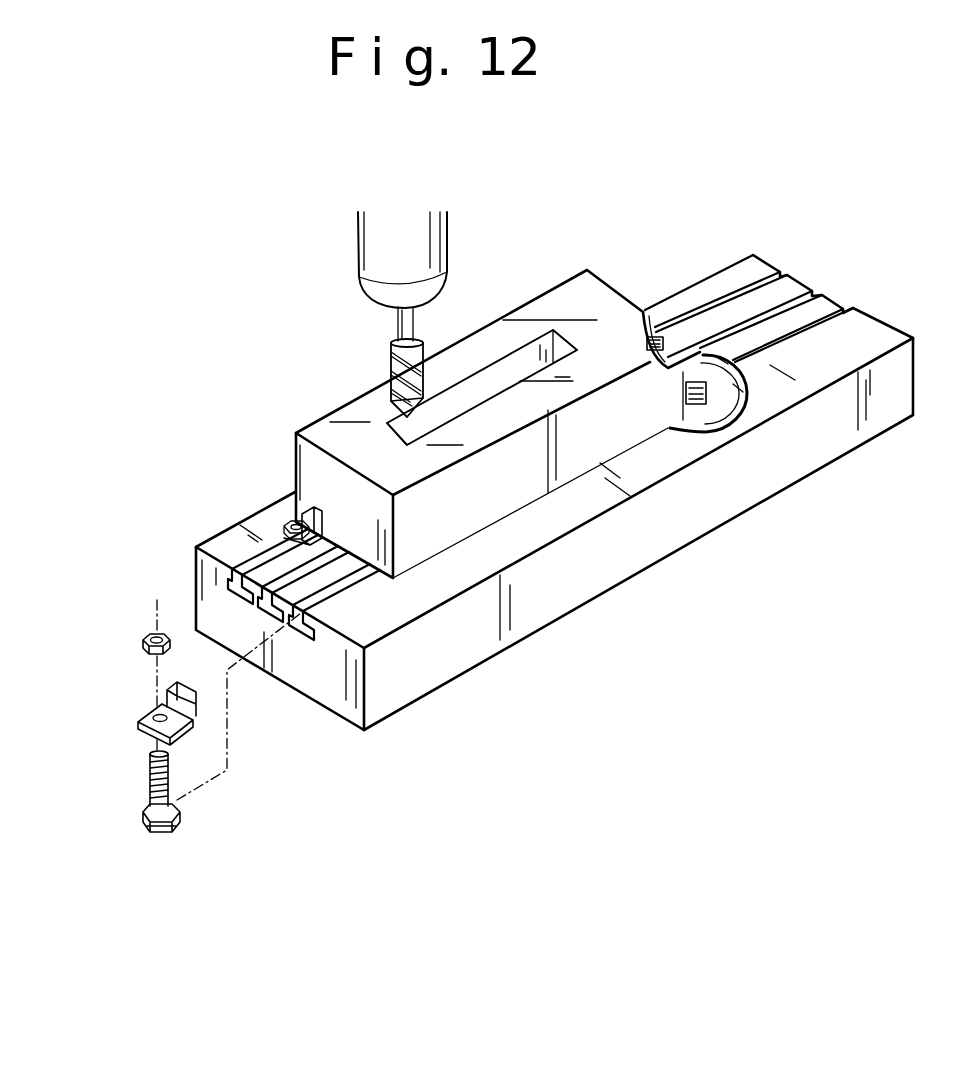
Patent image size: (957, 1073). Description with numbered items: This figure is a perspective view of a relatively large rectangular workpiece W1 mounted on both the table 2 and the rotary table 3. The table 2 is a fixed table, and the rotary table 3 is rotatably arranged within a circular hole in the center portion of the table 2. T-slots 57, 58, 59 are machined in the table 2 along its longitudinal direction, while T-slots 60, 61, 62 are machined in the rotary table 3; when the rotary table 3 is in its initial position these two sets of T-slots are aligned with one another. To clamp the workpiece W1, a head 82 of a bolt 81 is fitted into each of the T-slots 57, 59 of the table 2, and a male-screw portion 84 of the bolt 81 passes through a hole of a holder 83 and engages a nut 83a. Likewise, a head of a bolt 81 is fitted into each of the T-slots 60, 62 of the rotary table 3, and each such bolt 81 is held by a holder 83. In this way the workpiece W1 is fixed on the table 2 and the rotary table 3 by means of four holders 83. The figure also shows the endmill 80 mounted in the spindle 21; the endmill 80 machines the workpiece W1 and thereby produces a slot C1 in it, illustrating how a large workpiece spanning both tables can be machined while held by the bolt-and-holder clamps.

The table 2 is at (663, 547).
The rotary table 3 is at (718, 428).
The spindle 21 is at (448, 243).
The T-slot 57 is at (215, 553).
The T-slot 58 is at (258, 548).
The T-slot 59 is at (343, 595).
The T-slot 60 is at (652, 335).
The T-slot 61 is at (690, 336).
The T-slot 62 is at (772, 400).
The endmill 80 is at (391, 363).
The bolt 81 is at (747, 405).
The head of bolt 82 is at (168, 833).
The holder 83 is at (140, 708).
The nut 83a is at (140, 642).
The male-screw portion 84 is at (150, 778).
The slot C1 is at (388, 421).
The workpiece W1 is at (520, 498).